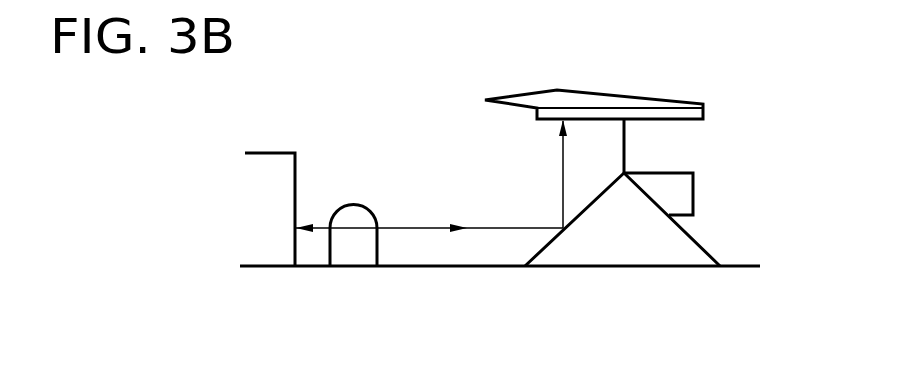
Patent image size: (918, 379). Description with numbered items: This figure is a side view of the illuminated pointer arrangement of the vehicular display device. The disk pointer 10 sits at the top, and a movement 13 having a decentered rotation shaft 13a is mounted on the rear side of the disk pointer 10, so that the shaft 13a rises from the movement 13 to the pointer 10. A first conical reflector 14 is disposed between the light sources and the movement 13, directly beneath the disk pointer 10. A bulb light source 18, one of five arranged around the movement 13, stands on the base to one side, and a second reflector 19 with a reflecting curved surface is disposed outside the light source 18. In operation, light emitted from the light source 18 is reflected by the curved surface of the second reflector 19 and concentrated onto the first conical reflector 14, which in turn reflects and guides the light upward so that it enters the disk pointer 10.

The disk pointer 10 is at (686, 95).
The movement 13 is at (680, 200).
The decentered rotation shaft 13a is at (624, 148).
The first conical reflector 14 is at (654, 252).
The bulb light source 18 is at (347, 255).
The second reflector 19 is at (258, 253).